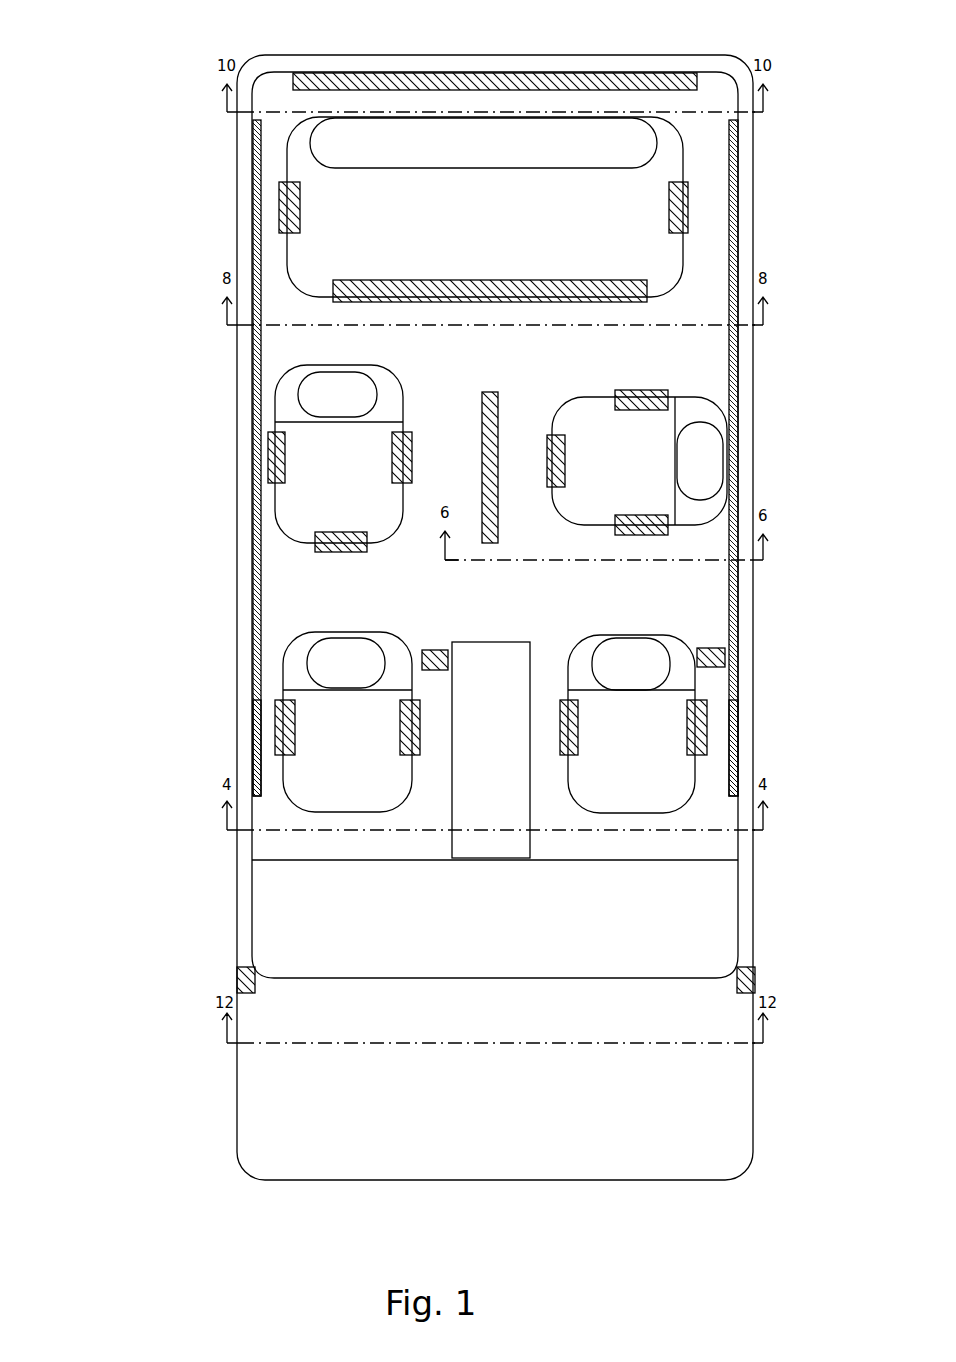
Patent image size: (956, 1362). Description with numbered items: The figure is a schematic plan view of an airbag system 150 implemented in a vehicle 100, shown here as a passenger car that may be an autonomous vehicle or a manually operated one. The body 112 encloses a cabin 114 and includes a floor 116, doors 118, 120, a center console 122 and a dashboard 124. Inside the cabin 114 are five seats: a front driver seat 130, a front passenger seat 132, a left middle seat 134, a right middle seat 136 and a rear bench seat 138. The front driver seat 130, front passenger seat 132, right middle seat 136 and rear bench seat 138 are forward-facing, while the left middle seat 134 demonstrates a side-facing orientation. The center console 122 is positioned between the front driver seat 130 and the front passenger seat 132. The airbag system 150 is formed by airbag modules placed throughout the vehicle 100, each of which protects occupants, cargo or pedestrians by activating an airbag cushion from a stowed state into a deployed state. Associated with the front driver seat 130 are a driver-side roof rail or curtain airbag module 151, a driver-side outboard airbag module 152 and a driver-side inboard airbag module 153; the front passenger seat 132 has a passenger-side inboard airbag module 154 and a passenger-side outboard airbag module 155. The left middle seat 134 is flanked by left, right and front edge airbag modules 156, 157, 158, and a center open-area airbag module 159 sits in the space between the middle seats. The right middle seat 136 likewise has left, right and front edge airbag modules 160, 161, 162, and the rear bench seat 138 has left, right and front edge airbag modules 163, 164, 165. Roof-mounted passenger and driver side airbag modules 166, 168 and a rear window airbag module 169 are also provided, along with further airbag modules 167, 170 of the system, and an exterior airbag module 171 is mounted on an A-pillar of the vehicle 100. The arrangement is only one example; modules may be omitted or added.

The vehicle 100 is at (153, 116).
The body 112 is at (748, 437).
The cabin 114 is at (718, 615).
The floor 116 is at (598, 607).
The door 118 is at (745, 693).
The door 120 is at (240, 725).
The center console 122 is at (532, 648).
The dashboard 124 is at (270, 896).
The front driver seat 130 is at (662, 743).
The front passenger seat 132 is at (315, 742).
The left middle seat 134 is at (637, 484).
The right middle seat 136 is at (353, 482).
The rear bench seat 138 is at (662, 282).
The airbag system 150 is at (426, 239).
The driver-side roof rail airbag module 151 is at (737, 765).
The driver-side outboard airbag module 152 is at (707, 732).
The driver-side inboard airbag module 153 is at (562, 705).
The passenger-side inboard airbag module 154 is at (432, 697).
The passenger-side outboard airbag module 155 is at (278, 715).
The left edge airbag module 156 is at (666, 395).
The right edge airbag module 157 is at (648, 537).
The front edge airbag module 158 is at (580, 445).
The center open-area airbag module 159 is at (510, 386).
The left edge airbag module 160 is at (408, 444).
The right edge airbag module 161 is at (345, 553).
The front edge airbag module 162 is at (285, 460).
The left edge airbag module 163 is at (690, 188).
The right edge airbag module 164 is at (548, 280).
The front edge airbag module 165 is at (300, 212).
The roof-mounted passenger side airbag module 166 is at (436, 650).
The airbag module 167 is at (725, 657).
The roof-mounted driver side airbag module 168 is at (250, 755).
The rear window airbag module 169 is at (698, 74).
The airbag module 170 is at (752, 976).
The exterior airbag module 171 is at (240, 976).